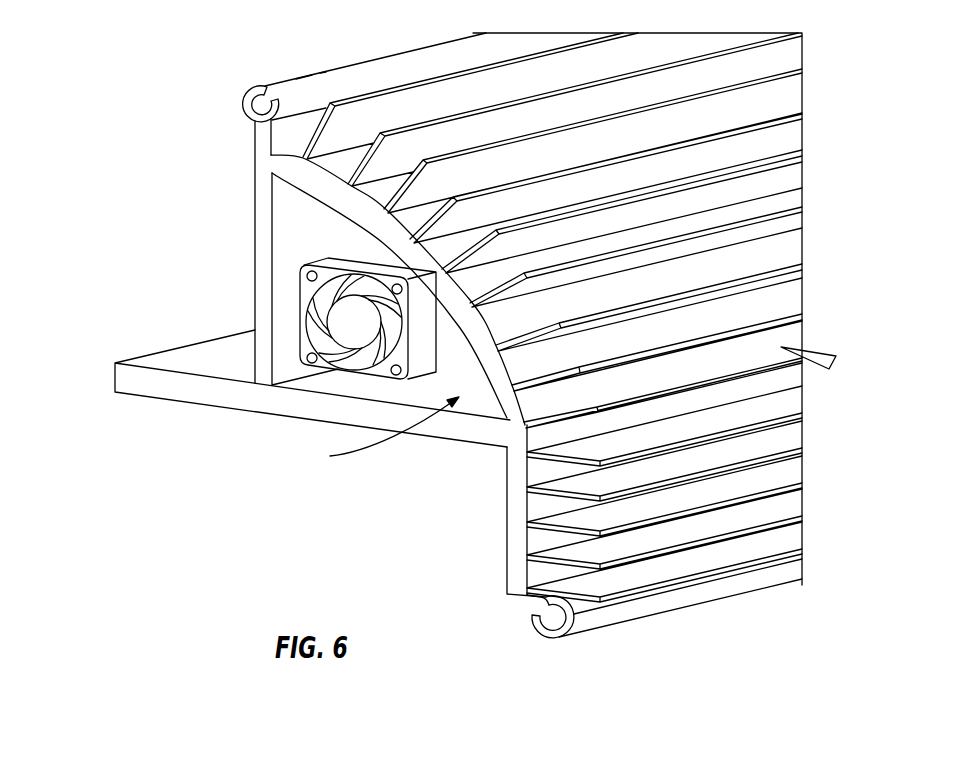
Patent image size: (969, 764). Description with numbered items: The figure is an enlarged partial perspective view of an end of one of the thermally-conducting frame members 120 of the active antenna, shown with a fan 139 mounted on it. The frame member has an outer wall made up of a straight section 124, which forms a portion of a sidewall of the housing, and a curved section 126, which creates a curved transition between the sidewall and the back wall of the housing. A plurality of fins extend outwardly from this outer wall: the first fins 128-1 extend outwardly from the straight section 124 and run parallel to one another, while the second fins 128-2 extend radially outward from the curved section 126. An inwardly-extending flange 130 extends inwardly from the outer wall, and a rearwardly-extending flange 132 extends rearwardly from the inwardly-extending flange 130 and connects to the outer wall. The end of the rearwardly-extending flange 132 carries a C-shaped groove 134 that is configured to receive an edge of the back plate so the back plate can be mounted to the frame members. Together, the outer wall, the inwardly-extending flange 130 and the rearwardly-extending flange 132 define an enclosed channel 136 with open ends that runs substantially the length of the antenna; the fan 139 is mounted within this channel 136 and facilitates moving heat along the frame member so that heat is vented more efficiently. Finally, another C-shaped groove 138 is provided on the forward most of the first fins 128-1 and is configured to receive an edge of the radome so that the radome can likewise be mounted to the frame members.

The thermally-conducting frame member 120 is at (118, 141).
The straight section 124 is at (513, 527).
The curved section 126 is at (328, 182).
The first fins 128-1 is at (803, 522).
The second fins 128-2 is at (803, 127).
The inwardly-extending flange 130 is at (120, 365).
The rearwardly-extending flange 132 is at (262, 259).
The C-shaped groove 134 is at (243, 116).
The channel 136 is at (372, 433).
The C-shaped groove 138 is at (536, 622).
The fan 139 is at (300, 350).